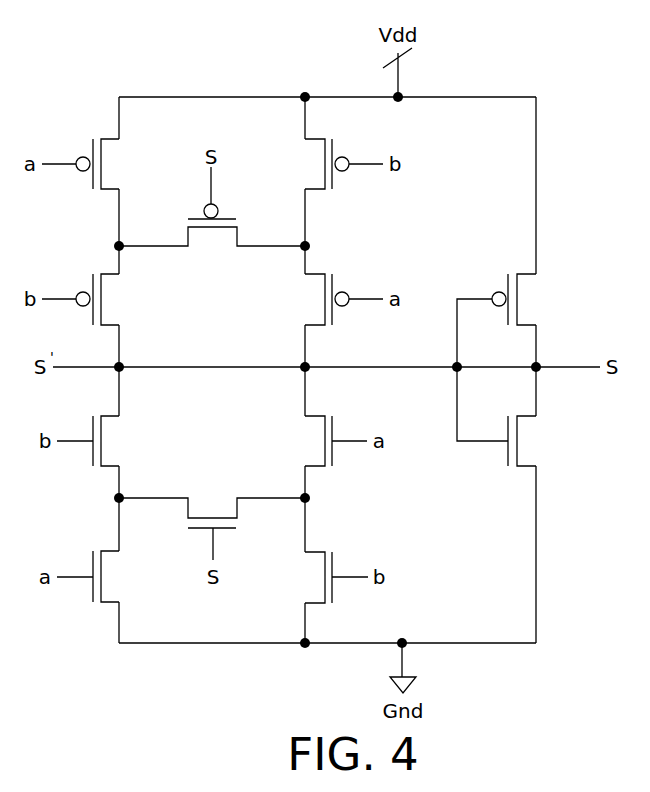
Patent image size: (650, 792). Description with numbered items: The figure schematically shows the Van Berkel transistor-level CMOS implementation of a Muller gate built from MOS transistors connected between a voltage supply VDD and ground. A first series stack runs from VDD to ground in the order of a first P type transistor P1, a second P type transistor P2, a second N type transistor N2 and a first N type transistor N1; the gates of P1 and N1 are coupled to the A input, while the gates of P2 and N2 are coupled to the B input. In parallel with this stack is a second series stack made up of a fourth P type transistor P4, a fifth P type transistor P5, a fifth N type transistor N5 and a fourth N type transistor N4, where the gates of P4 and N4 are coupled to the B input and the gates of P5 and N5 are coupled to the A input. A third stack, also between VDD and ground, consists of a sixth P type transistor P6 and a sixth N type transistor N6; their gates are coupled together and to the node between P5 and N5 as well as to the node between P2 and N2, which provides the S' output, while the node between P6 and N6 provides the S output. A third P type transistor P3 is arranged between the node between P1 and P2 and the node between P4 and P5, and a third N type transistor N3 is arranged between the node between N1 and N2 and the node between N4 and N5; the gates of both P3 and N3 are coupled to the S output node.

The first P type transistor P1 is at (94, 164).
The second P type transistor P2 is at (94, 299).
The third P type transistor P3 is at (212, 216).
The fourth P type transistor P4 is at (334, 164).
The fifth P type transistor P5 is at (334, 299).
The sixth P type transistor P6 is at (509, 320).
The first N type transistor N1 is at (103, 576).
The second N type transistor N2 is at (103, 441).
The third N type transistor N3 is at (212, 520).
The fourth N type transistor N4 is at (324, 577).
The fifth N type transistor N5 is at (323, 441).
The sixth N type transistor N6 is at (510, 416).